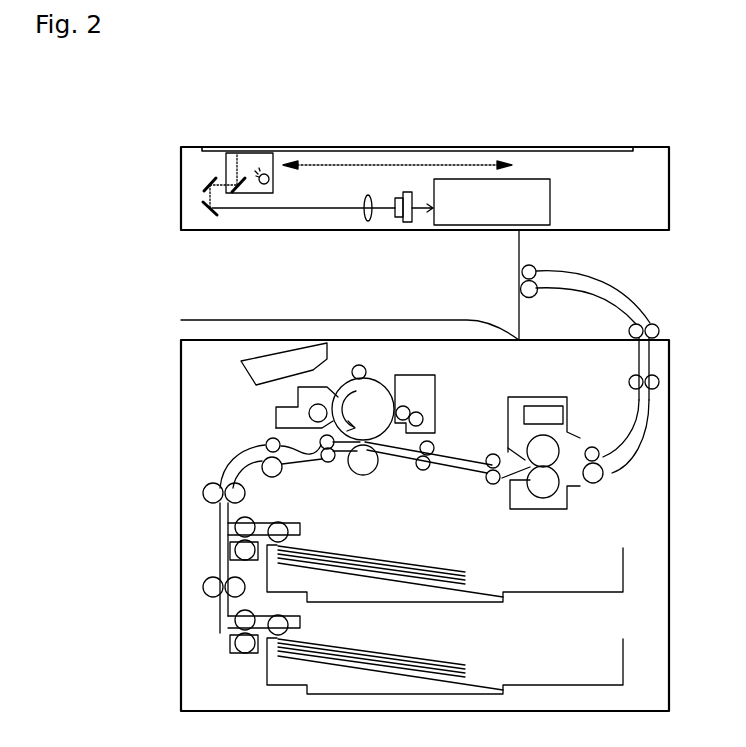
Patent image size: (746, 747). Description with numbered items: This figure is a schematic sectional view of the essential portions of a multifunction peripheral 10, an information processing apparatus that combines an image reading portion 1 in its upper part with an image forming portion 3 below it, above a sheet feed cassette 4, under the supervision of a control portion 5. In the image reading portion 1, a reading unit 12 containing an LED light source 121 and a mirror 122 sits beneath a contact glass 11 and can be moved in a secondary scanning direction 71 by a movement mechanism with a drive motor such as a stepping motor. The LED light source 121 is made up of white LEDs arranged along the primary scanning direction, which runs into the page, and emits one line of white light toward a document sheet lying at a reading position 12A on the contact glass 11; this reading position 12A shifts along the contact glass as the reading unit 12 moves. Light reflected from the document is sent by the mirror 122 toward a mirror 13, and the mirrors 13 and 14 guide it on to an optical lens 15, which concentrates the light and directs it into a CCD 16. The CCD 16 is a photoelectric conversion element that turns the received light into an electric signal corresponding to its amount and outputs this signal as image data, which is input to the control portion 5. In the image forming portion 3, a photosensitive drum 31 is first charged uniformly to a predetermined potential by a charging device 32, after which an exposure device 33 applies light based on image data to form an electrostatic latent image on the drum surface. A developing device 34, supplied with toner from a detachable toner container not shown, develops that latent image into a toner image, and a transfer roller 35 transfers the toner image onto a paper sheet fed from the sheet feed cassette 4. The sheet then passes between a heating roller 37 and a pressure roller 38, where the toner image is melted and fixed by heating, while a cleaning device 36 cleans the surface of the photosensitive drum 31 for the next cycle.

The multifunction peripheral 10 is at (163, 117).
The image reading portion 1 is at (181, 193).
The contact glass 11 is at (402, 148).
The secondary scanning direction 71 is at (382, 163).
The reading unit 12 is at (267, 195).
The reading position 12A is at (257, 172).
The LED light source 121 is at (270, 180).
The mirror 122 is at (241, 193).
The mirror 13 is at (205, 188).
The mirror 14 is at (211, 213).
The optical lens 15 is at (367, 221).
The CCD 16 is at (398, 222).
The control portion 5 is at (552, 207).
The image forming portion 3 is at (202, 358).
The photosensitive drum 31 is at (375, 378).
The charging device 32 is at (359, 365).
The exposure device 33 is at (243, 377).
The developing device 34 is at (276, 415).
The transfer roller 35 is at (370, 475).
The cleaning device 36 is at (436, 390).
The heating roller 37 is at (527, 442).
The pressure roller 38 is at (530, 494).
The sheet feed cassette 4 is at (623, 574).